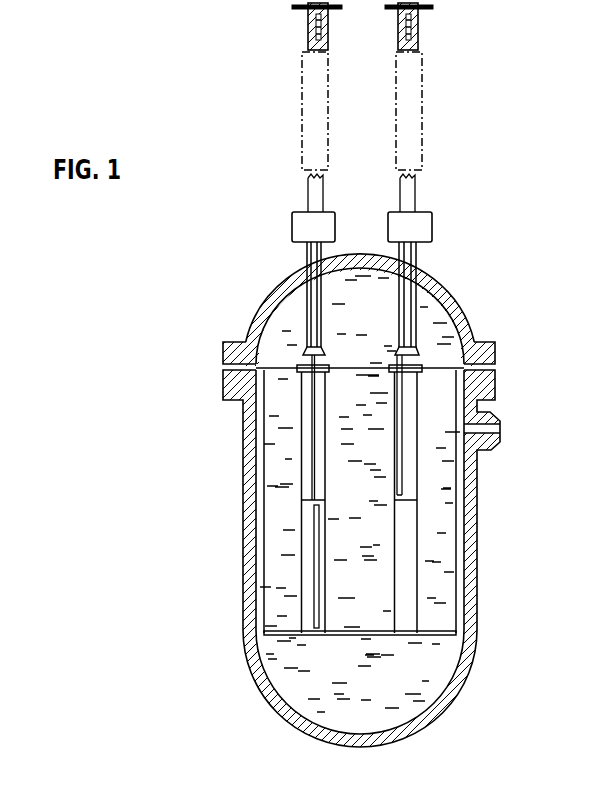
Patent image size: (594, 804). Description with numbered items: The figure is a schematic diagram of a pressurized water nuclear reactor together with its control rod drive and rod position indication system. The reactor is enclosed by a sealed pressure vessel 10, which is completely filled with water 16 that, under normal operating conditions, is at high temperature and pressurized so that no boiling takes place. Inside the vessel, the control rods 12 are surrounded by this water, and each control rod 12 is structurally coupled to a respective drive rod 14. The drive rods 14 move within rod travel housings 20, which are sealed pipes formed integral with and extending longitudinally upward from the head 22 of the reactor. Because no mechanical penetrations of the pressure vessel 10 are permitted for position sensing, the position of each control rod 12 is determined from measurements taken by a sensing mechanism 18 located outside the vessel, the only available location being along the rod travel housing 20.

The pressure vessel 10 is at (476, 608).
The control rod 12 is at (316, 563).
The drive rod 14 is at (311, 315).
The water 16 is at (452, 497).
The sensing mechanism 18 is at (312, 124).
The rod travel housing 20 is at (310, 30).
The head 22 is at (436, 280).